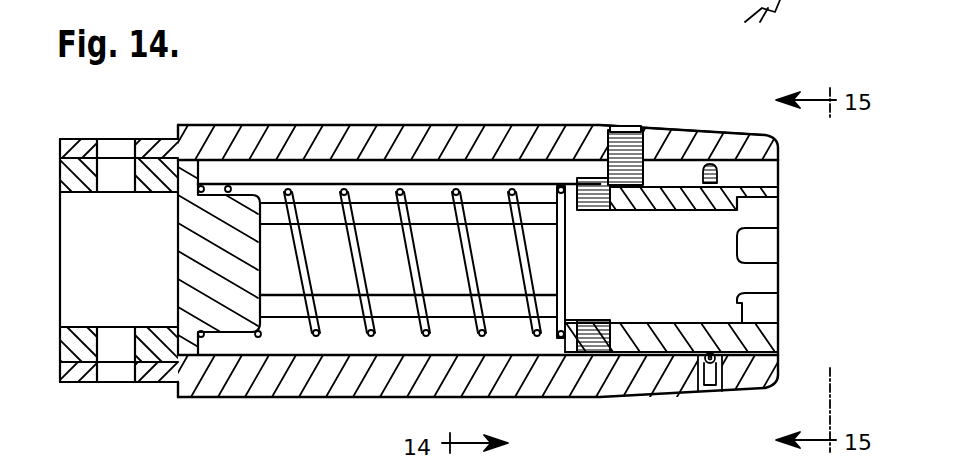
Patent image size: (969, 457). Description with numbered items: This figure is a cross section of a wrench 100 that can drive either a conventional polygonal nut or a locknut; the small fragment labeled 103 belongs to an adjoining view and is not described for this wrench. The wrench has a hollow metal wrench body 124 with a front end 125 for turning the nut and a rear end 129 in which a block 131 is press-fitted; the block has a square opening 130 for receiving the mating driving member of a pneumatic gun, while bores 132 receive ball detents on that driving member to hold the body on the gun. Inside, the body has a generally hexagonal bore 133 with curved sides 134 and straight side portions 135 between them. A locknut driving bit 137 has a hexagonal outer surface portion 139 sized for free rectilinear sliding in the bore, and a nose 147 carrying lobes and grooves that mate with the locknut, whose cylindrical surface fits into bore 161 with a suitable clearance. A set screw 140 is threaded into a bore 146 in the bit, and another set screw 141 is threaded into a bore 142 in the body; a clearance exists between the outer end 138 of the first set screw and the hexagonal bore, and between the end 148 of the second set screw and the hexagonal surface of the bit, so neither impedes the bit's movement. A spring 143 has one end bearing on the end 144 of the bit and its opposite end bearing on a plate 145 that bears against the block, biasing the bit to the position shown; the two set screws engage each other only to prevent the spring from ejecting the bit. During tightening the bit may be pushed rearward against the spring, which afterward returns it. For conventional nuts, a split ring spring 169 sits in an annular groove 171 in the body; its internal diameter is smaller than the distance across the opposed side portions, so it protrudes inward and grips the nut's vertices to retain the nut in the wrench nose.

The wrench 100 is at (358, 108).
The adjacent member 103 is at (744, 20).
The wrench body 124 is at (419, 125).
The front end 125 is at (782, 153).
The rear end 129 is at (78, 140).
The square opening 130 is at (78, 192).
The block 131 is at (154, 148).
The bores 132 is at (104, 176).
The hexagonal bore 133 is at (470, 166).
The curved sides 134 is at (526, 182).
The side portions 135 is at (320, 210).
The locknut driving bit 137 is at (666, 128).
The outer end 138 is at (573, 180).
The hexagonal outer surface portion 139 is at (632, 380).
The set screw 140 is at (572, 216).
The set screw 141 is at (632, 132).
The bore 142 is at (612, 124).
The spring 143 is at (360, 232).
The end 144 is at (545, 356).
The plate 145 is at (212, 354).
The bore 146 is at (598, 210).
The nose 147 is at (782, 188).
The end 148 is at (640, 210).
The bore 161 is at (674, 324).
The split ring spring 169 is at (710, 162).
The annular groove 171 is at (712, 374).